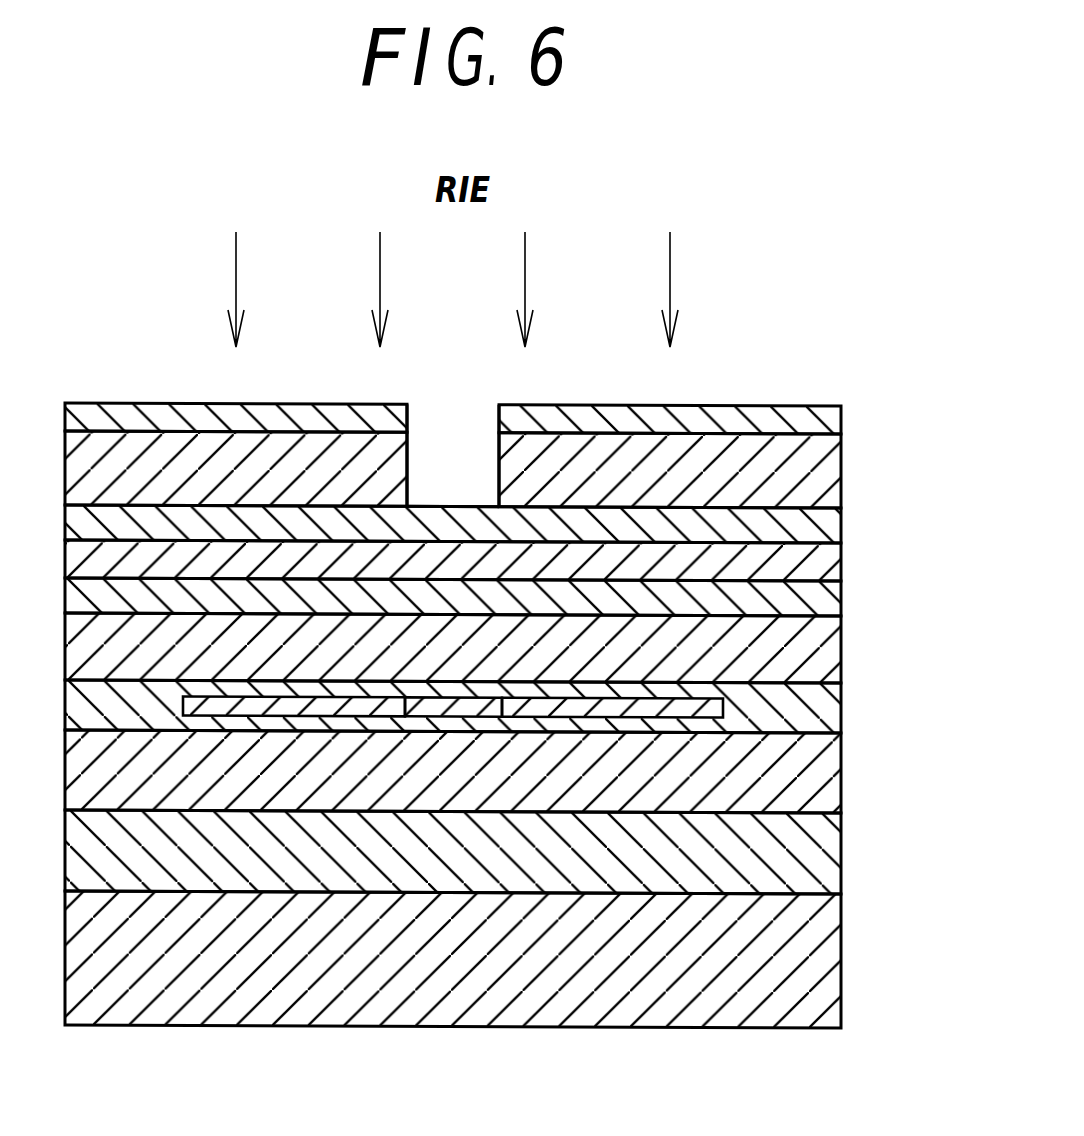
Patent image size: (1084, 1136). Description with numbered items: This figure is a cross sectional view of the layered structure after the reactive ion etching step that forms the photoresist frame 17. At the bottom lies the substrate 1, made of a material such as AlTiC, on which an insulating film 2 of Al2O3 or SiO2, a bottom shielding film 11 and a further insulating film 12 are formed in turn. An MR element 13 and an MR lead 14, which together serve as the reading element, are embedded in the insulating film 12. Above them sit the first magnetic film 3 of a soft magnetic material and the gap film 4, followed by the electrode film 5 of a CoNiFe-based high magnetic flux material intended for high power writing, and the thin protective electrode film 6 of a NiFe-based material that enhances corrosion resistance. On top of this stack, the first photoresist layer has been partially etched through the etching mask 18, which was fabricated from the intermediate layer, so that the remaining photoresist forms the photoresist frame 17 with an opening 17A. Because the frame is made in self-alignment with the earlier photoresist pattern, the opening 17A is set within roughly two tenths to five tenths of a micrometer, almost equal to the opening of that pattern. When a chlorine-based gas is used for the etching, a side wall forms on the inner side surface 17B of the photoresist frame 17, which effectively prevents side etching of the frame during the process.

The substrate 1 is at (833, 970).
The insulating film 2 is at (820, 850).
The bottom shielding film 11 is at (820, 780).
The insulating film 12 is at (820, 715).
The MR element 13 is at (460, 703).
The MR lead 14 is at (545, 703).
The first magnetic film 3 is at (828, 652).
The gap film 4 is at (822, 600).
The electrode film 5 is at (820, 562).
The protective electrode film 6 is at (822, 525).
The photoresist frame 17 is at (832, 467).
The opening 17A is at (451, 437).
The inner side surface 17B is at (412, 458).
The etching mask 18 is at (832, 418).